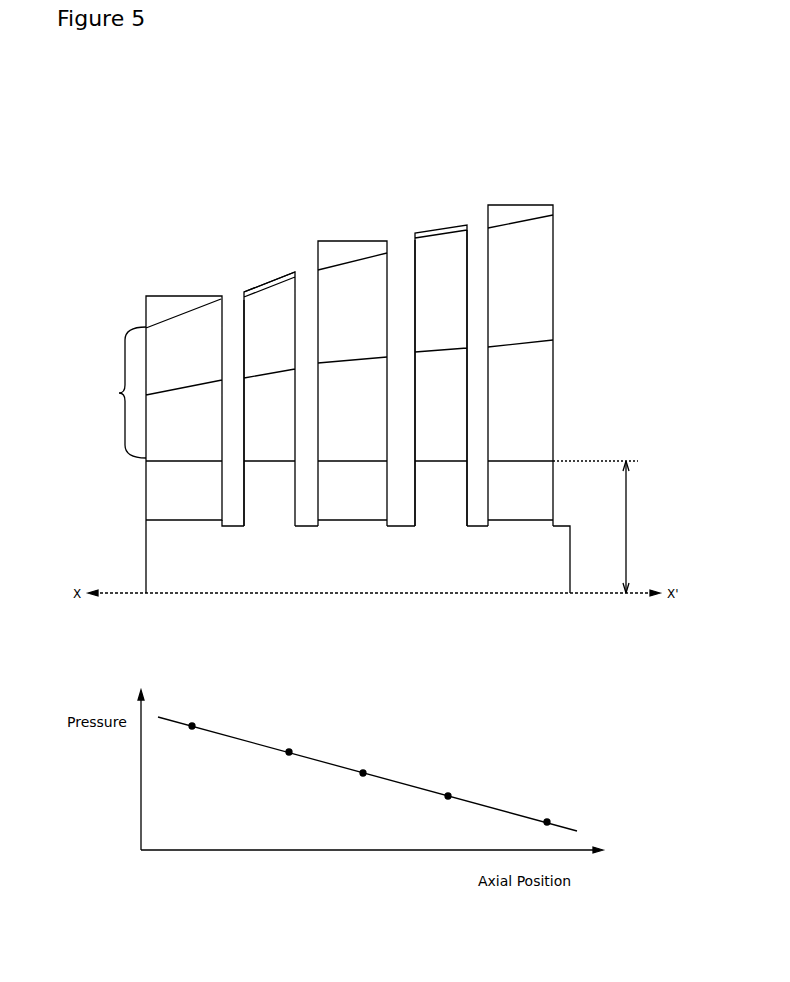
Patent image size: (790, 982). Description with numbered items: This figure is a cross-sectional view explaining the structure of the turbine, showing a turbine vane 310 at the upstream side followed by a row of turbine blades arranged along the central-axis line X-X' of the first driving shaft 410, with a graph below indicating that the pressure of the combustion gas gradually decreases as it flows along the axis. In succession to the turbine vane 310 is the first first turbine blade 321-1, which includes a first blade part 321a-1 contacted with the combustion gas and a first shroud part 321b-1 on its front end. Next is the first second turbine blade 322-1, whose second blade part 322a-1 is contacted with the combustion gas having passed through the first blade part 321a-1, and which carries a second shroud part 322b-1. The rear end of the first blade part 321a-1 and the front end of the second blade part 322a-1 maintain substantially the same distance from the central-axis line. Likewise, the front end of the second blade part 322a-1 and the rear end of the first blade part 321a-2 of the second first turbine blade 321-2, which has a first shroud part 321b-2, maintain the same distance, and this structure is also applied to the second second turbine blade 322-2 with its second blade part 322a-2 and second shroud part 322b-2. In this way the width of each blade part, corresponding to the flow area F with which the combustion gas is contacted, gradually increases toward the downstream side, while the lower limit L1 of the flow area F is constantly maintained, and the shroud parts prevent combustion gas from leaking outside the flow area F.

The turbine vane 310 is at (153, 293).
The first first turbine blade 321-1 is at (268, 208).
The first blade part 321a-1 is at (247, 320).
The first shroud part 321b-1 is at (268, 281).
The first second turbine blade 322-1 is at (370, 150).
The second blade part 322a-1 is at (315, 268).
The second shroud part 322b-1 is at (367, 362).
The second first turbine blade 321-2 is at (495, 115).
The first blade part 321a-2 is at (437, 225).
The first shroud part 321b-2 is at (470, 270).
The second second turbine blade 322-2 is at (640, 132).
The second blade part 322a-2 is at (541, 234).
The second shroud part 322b-2 is at (522, 460).
The first driving shaft 410 is at (147, 553).
The flow area F is at (125, 392).
The lower limit of the flow area L1 is at (600, 527).